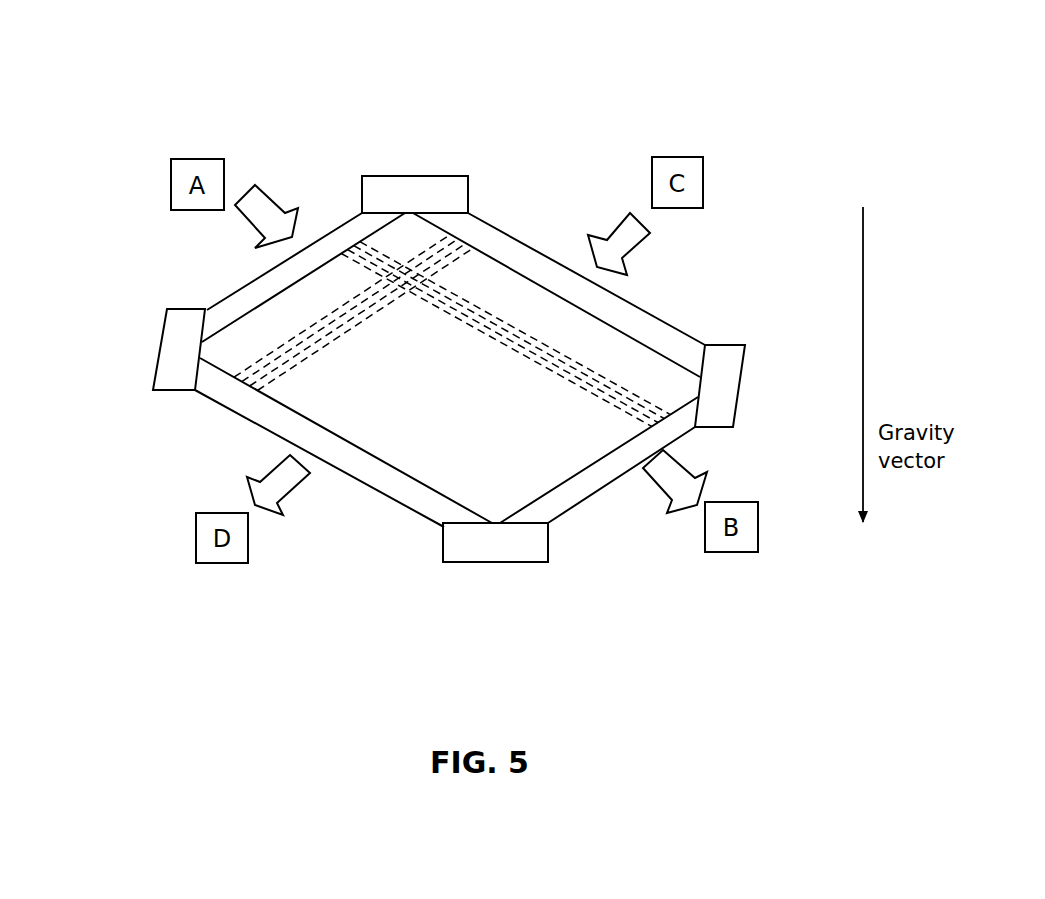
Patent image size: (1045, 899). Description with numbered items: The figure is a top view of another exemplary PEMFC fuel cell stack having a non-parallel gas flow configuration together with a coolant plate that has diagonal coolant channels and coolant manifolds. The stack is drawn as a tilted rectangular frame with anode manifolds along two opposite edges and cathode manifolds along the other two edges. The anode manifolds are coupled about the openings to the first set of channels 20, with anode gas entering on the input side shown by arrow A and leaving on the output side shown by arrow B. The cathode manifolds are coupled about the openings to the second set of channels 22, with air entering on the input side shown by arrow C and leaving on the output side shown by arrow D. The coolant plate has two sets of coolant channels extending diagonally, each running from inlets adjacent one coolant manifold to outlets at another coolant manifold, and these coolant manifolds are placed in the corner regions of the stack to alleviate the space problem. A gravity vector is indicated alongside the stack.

The first set of channels 20 is at (609, 368).
The second set of channels 22 is at (268, 329).